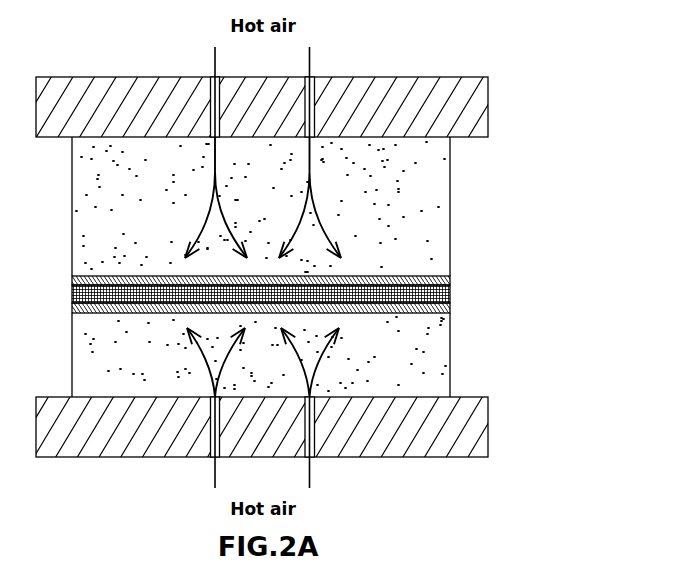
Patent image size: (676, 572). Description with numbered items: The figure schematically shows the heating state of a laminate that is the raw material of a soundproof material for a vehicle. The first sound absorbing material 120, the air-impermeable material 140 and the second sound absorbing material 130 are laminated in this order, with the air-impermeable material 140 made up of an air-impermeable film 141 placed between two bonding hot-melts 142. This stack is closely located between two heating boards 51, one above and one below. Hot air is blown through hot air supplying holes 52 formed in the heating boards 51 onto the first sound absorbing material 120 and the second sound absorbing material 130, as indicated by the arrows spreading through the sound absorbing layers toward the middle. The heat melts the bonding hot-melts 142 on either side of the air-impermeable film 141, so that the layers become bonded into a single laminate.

The heating board 51 is at (477, 108).
The hot air supplying hole 52 is at (315, 77).
The second sound absorbing material 130 is at (435, 178).
The first sound absorbing material 120 is at (440, 367).
The air-impermeable material 140 is at (353, 292).
The air-impermeable film 141 is at (452, 290).
The bonding hot-melt 142 is at (451, 278).